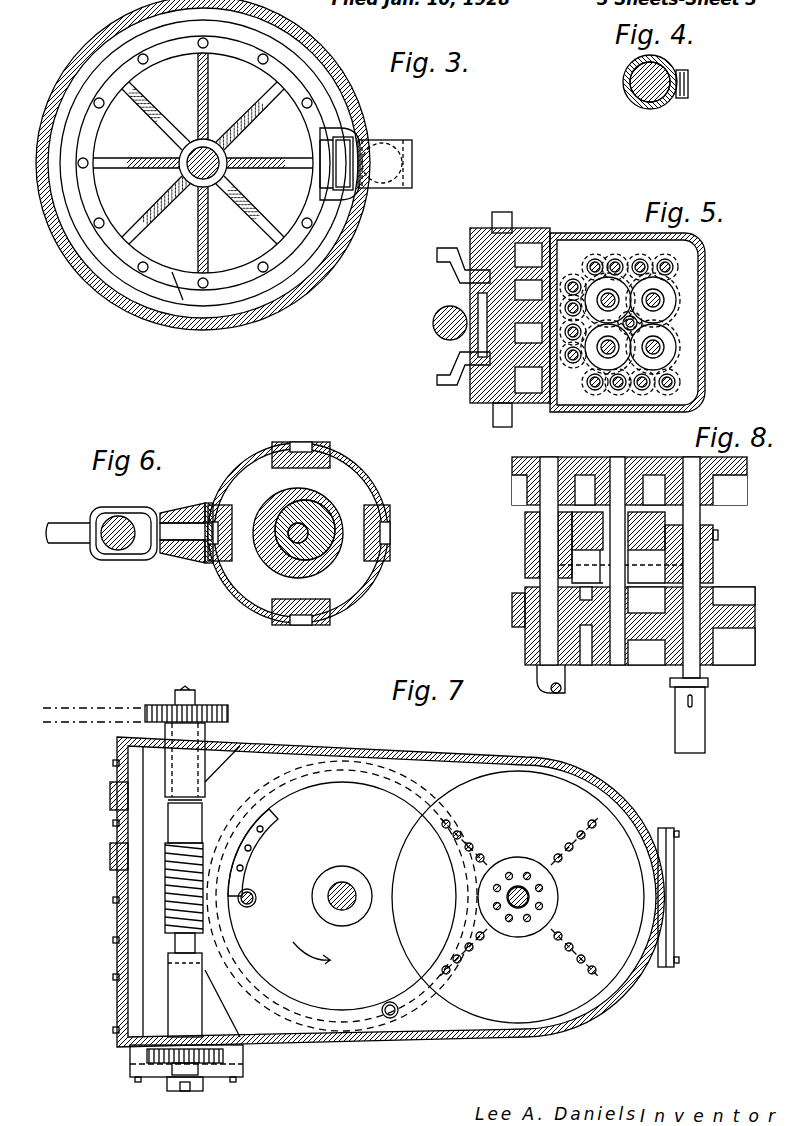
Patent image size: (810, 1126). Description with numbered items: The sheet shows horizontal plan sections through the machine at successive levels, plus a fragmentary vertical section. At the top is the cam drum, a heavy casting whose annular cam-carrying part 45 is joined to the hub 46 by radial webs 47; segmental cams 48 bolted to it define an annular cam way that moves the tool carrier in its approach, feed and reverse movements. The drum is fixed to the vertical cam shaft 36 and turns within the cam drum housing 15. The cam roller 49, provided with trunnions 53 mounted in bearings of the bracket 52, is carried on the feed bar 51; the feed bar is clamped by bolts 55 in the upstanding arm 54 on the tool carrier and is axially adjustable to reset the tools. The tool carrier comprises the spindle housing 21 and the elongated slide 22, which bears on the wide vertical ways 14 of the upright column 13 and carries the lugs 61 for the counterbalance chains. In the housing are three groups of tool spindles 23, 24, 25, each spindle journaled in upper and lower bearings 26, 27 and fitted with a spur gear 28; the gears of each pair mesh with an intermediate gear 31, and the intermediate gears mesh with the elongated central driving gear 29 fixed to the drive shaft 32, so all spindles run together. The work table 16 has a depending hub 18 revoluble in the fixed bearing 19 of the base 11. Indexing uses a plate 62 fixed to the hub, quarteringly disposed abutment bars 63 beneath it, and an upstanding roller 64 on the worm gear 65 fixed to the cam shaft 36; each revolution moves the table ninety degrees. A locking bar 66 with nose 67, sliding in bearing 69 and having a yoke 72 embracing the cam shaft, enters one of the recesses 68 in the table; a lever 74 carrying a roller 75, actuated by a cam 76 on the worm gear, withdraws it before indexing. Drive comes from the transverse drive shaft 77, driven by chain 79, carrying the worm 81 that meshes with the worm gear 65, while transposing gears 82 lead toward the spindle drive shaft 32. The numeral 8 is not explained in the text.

In FIG. 5, the center shaft member 8 is at (637, 314).
In FIG. 7, the base 11 is at (398, 746).
In FIG. 5, the upright column 13 is at (437, 390).
In FIG. 5, the vertical ways 14 is at (475, 282).
In FIG. 3, the cam drum housing 15 is at (150, 305).
In FIG. 6, the work table 16 is at (380, 577).
In FIG. 6, the depending hub 18 is at (320, 560).
In FIG. 6, the fixed bearing 19 is at (285, 572).
In FIG. 5, the spindle housing 21 is at (705, 290).
In FIG. 8, the spindle housing 21 is at (655, 605).
In FIG. 5, the slide 22 is at (520, 235).
In FIG. 5, the tool spindles 23 is at (614, 252).
In FIG. 5, the tool spindles 24 is at (575, 275).
In FIG. 5, the tool spindles 25 is at (620, 396).
In FIG. 8, the tool spindles 25 is at (705, 724).
In FIG. 8, the upper bearing 26 is at (675, 470).
In FIG. 8, the lower bearing 27 is at (720, 650).
In FIG. 8, the spur gear 28 is at (718, 537).
In FIG. 5, the central driving gear 29 is at (680, 313).
In FIG. 8, the central driving gear 29 is at (525, 527).
In FIG. 5, the intermediate gear 31 is at (678, 290).
In FIG. 8, the intermediate gear 31 is at (665, 520).
In FIG. 6, the drive shaft 32 is at (302, 530).
In FIG. 8, the drive shaft 32 is at (565, 683).
In FIG. 7, the drive shaft 32 is at (524, 890).
In FIG. 3, the cam shaft 36 is at (213, 158).
In FIG. 5, the cam shaft 36 is at (433, 323).
In FIG. 6, the cam shaft 36 is at (110, 540).
In FIG. 3, the annular cam-carrying part 45 is at (115, 118).
In FIG. 3, the hub 46 is at (190, 160).
In FIG. 3, the radial webs 47 is at (258, 112).
In FIG. 3, the segmental cams 48 is at (325, 98).
In FIG. 3, the cam roller 49 is at (343, 150).
In FIG. 3, the feed bar 51 is at (403, 156).
In FIG. 4, the feed bar 51 is at (672, 74).
In FIG. 3, the bracket 52 is at (370, 192).
In FIG. 3, the trunnions 53 is at (320, 140).
In FIG. 4, the upstanding arm 54 is at (630, 80).
In FIG. 4, the bolts 55 is at (688, 94).
In FIG. 5, the lugs 61 is at (512, 214).
In FIG. 7, the plate 62 is at (518, 897).
In FIG. 7, the abutment bars 63 is at (350, 882).
In FIG. 7, the roller 64 is at (384, 1004).
In FIG. 7, the worm gear 65 is at (358, 1015).
In FIG. 6, the locking bar 66 is at (75, 523).
In FIG. 6, the nose 67 is at (186, 556).
In FIG. 6, the recesses 68 is at (216, 527).
In FIG. 6, the bearing 69 is at (185, 510).
In FIG. 6, the yoke 72 is at (128, 560).
In FIG. 7, the lever 74 is at (247, 904).
In FIG. 7, the roller 75 is at (257, 896).
In FIG. 7, the cam 76 is at (255, 887).
In FIG. 7, the transverse drive shaft 77 is at (190, 758).
In FIG. 7, the chain 79 is at (108, 705).
In FIG. 7, the worm 81 is at (165, 882).
In FIG. 7, the transposing gears 82 is at (145, 1058).